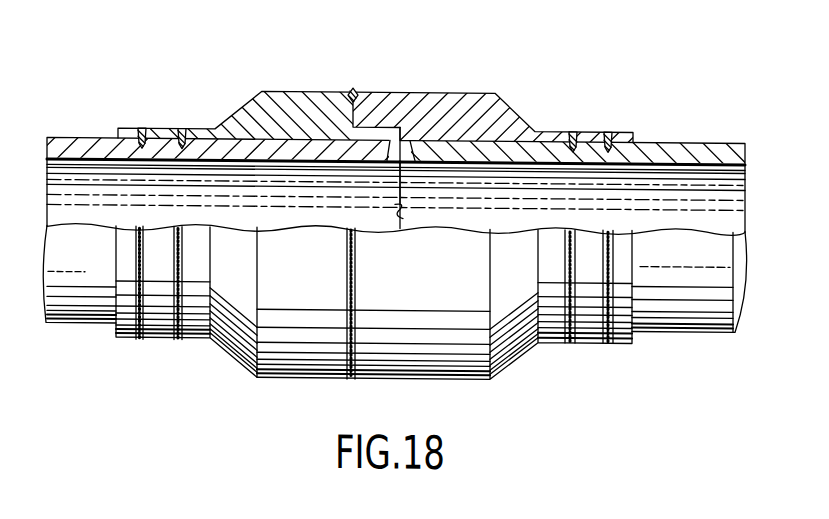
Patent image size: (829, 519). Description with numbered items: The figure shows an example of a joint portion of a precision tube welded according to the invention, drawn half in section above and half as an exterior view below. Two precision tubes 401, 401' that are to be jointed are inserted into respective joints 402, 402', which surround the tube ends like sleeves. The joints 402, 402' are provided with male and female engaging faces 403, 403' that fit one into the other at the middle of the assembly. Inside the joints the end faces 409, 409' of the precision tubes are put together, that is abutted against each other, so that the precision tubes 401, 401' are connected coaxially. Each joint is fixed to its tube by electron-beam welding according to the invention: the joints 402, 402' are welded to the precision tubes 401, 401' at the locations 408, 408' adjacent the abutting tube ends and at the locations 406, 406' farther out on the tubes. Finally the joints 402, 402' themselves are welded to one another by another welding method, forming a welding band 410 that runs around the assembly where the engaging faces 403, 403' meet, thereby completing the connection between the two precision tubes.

The precision tube 401 is at (220, 212).
The precision tube 401' is at (573, 215).
The joint 402 is at (231, 212).
The joint 402' is at (489, 213).
The male engaging face 403 is at (351, 96).
The female engaging face 403' is at (421, 89).
The electron-beam weld 406 is at (161, 216).
The electron-beam weld 406' is at (596, 213).
The electron-beam weld 408 is at (365, 176).
The electron-beam weld 408' is at (434, 175).
The end face 409 is at (378, 218).
The end face 409' is at (435, 197).
The welding band 410 is at (356, 83).